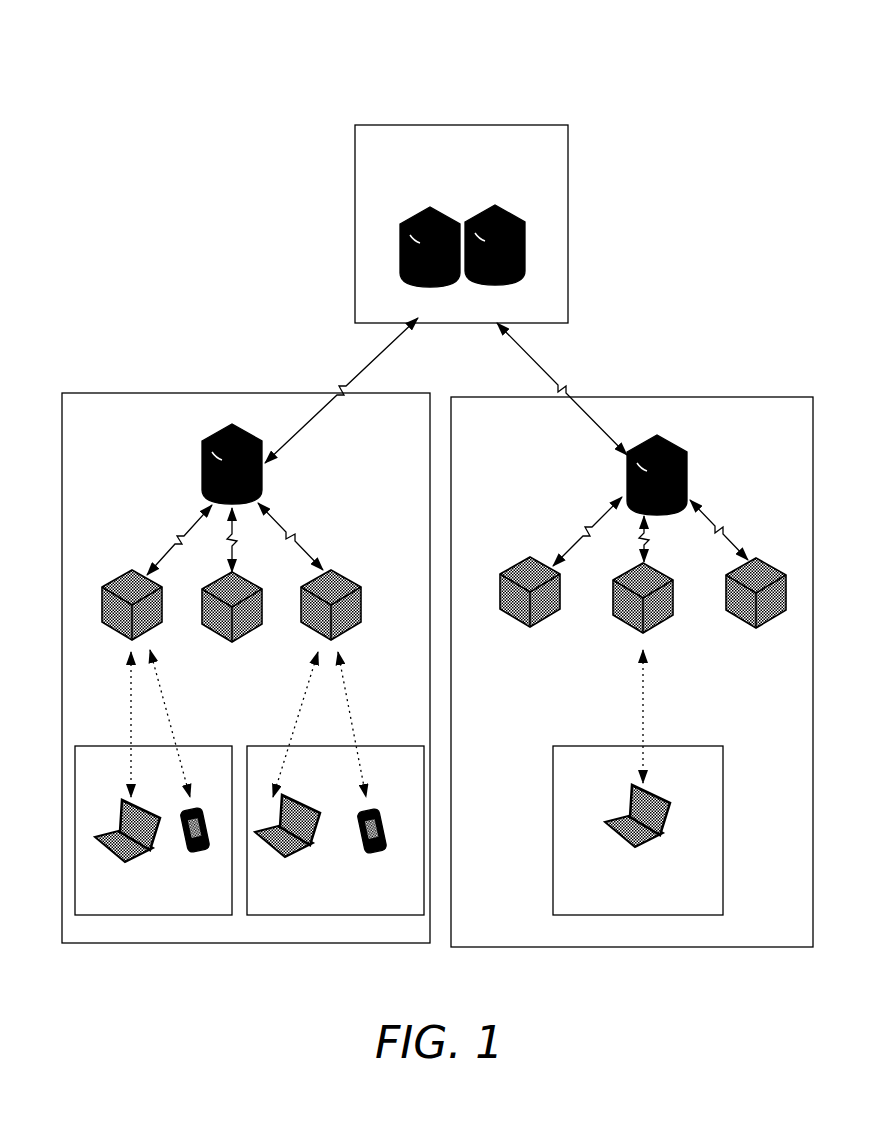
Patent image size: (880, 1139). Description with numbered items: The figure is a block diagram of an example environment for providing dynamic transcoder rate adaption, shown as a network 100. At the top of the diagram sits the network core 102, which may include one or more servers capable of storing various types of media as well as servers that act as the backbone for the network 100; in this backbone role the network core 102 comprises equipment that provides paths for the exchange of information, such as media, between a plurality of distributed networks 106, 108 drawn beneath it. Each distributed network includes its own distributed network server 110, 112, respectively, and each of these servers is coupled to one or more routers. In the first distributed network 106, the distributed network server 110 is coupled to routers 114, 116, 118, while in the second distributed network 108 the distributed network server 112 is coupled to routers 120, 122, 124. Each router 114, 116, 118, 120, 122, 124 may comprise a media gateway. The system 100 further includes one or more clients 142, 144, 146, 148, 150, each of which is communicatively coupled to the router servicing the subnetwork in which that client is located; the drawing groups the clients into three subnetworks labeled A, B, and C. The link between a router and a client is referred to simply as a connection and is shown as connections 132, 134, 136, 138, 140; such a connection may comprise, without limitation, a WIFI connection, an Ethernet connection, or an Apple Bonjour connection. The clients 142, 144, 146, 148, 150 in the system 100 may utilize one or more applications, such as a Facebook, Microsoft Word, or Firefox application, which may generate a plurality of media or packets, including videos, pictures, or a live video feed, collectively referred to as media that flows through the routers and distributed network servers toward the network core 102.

The network 100 is at (460, 480).
The network core 102 is at (461, 224).
The distributed network 106 is at (246, 648).
The distributed network 108 is at (655, 651).
The distributed network server 110 is at (258, 451).
The distributed network server 112 is at (694, 465).
The router 114 is at (150, 577).
The router 116 is at (254, 596).
The router 118 is at (360, 598).
The router 120 is at (567, 590).
The router 122 is at (673, 590).
The router 124 is at (792, 590).
The connection 132 is at (122, 724).
The connection 134 is at (167, 723).
The connection 136 is at (295, 724).
The connection 138 is at (347, 724).
The connection 140 is at (637, 716).
The client 142 is at (128, 860).
The client 144 is at (192, 852).
The client 146 is at (304, 860).
The client 148 is at (378, 852).
The client 150 is at (649, 838).